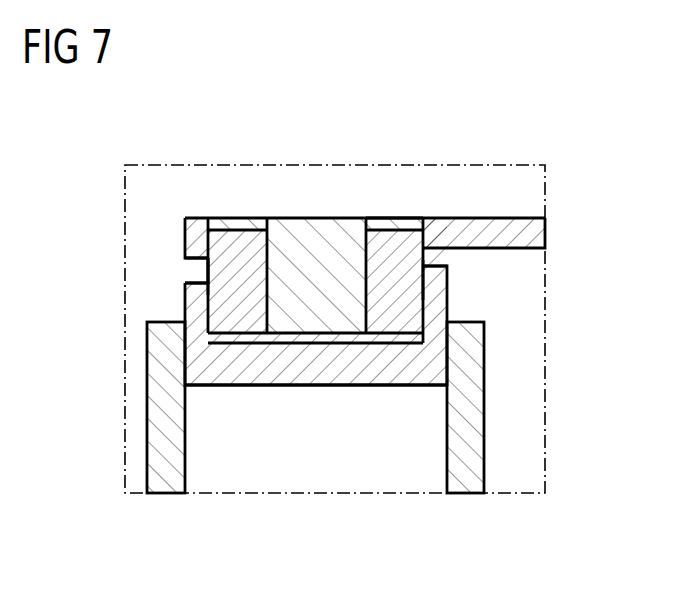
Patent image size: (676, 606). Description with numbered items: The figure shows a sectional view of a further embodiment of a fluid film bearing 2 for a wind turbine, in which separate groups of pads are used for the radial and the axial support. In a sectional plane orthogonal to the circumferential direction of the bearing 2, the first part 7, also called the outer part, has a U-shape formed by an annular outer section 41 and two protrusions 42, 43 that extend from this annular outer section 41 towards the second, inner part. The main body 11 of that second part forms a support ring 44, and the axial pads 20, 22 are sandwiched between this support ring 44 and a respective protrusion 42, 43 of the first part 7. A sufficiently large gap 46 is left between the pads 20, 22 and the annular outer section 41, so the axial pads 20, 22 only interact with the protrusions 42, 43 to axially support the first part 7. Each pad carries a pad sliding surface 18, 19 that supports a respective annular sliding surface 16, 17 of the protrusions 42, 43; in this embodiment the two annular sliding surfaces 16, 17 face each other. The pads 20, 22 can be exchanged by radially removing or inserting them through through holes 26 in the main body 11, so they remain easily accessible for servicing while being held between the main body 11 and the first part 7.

The bearing 2 is at (103, 232).
The first part 7 is at (394, 452).
The main body 11 is at (483, 227).
The annular sliding surface 16 is at (210, 295).
The annular sliding surface 17 is at (422, 297).
The pad sliding surface 18 is at (206, 268).
The pad sliding surface 19 is at (425, 256).
The pad 20 is at (380, 238).
The pad 22 is at (248, 250).
The through hole 26 is at (397, 193).
The annular outer section 41 is at (343, 378).
The protrusion 42 is at (196, 344).
The protrusion 43 is at (437, 350).
The support ring 44 is at (320, 238).
The gap 46 is at (312, 338).